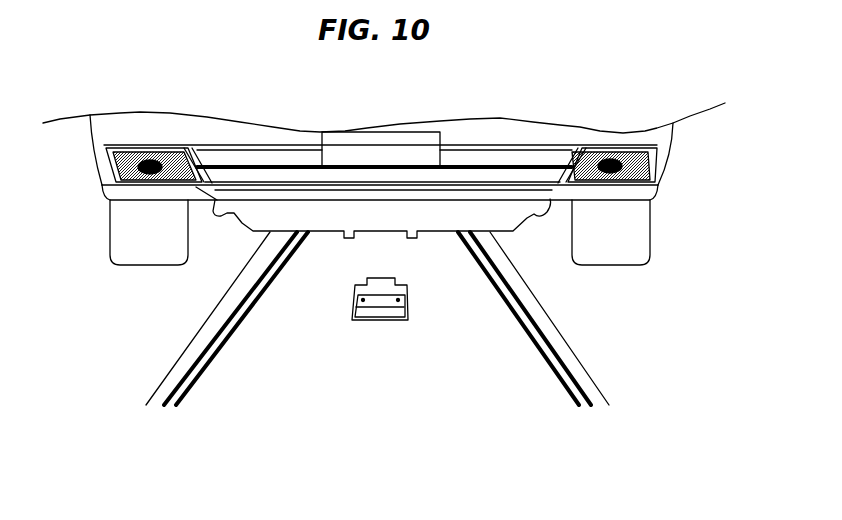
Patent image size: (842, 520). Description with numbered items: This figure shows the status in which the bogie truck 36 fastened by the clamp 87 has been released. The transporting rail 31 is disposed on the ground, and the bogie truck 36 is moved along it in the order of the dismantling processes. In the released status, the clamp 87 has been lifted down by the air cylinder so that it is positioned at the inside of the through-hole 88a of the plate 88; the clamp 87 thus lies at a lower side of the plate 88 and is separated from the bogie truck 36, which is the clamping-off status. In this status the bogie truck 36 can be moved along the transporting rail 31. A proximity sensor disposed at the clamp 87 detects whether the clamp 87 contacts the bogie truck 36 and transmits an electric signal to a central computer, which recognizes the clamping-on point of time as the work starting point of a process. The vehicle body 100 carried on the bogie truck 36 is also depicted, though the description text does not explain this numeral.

The vehicle 100 is at (92, 177).
The frame rails 31 is at (192, 358).
The cross member bracket 36 is at (328, 218).
The sensor unit 88 is at (397, 265).
The mounting plate 87 is at (385, 302).
The fastening holes 88a is at (407, 302).